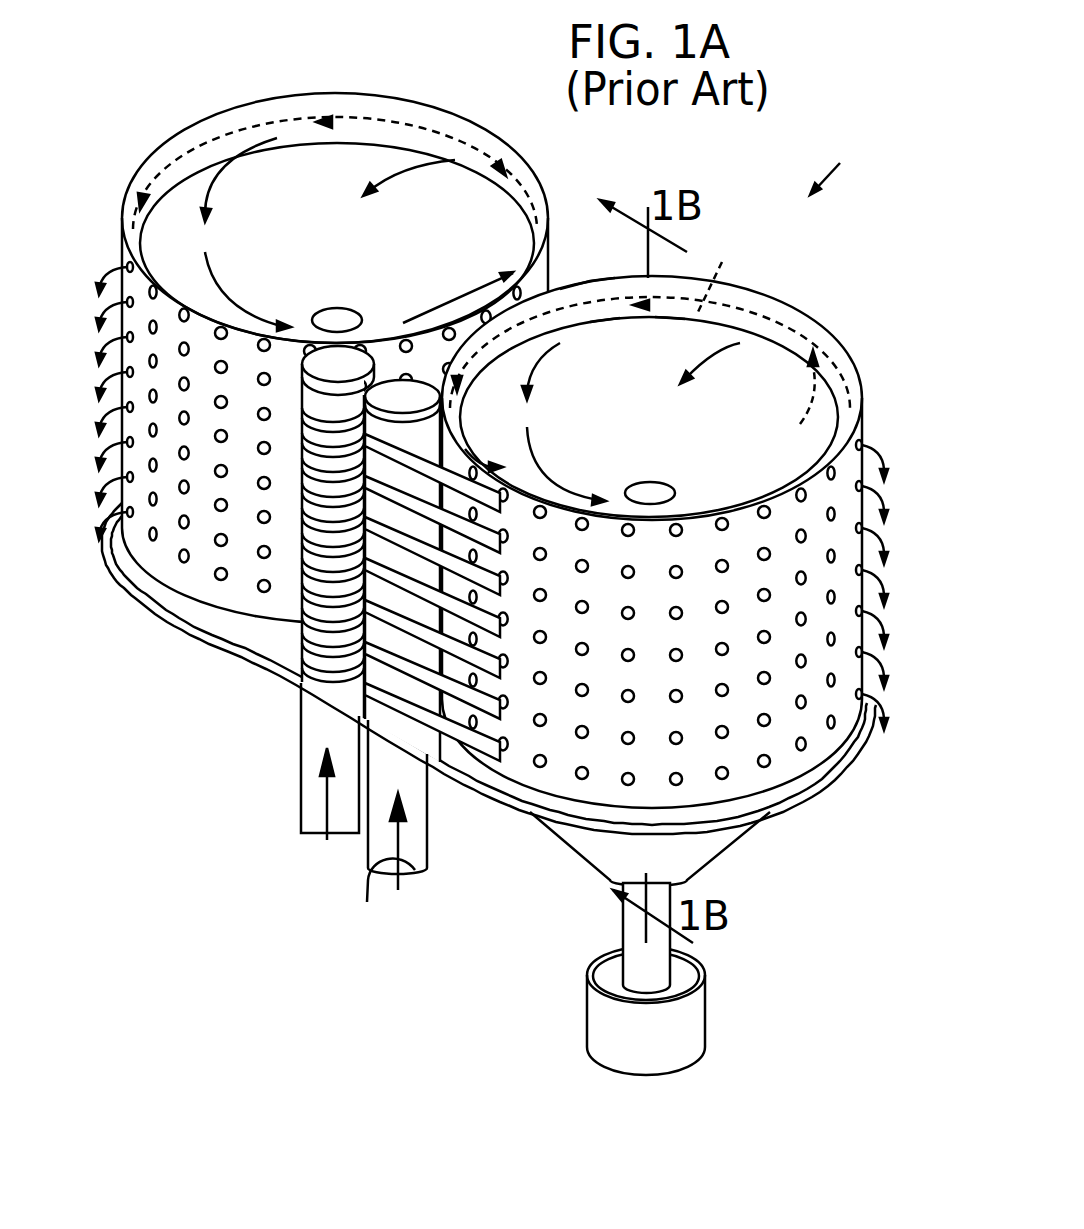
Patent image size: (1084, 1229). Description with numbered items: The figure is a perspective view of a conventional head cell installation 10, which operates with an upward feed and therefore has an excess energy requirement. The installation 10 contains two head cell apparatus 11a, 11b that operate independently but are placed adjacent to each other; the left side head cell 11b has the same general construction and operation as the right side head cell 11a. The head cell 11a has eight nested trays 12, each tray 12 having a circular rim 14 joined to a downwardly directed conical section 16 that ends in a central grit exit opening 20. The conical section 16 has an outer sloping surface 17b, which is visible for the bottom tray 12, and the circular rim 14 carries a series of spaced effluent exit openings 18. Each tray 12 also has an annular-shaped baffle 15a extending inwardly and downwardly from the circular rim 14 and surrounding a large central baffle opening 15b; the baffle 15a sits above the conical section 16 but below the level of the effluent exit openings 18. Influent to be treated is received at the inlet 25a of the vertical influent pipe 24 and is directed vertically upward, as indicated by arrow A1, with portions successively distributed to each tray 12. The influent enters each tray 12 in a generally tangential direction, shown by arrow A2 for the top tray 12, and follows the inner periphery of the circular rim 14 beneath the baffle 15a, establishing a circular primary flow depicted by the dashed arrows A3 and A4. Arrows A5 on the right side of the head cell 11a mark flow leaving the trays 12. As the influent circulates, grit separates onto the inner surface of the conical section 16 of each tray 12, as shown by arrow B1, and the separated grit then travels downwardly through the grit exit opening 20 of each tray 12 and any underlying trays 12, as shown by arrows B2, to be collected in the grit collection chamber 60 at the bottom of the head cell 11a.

The head cell installation 10 is at (840, 164).
The head cell apparatus 11a is at (836, 343).
The head cell apparatus 11b is at (432, 106).
The tray 12 is at (862, 425).
The circular rim 14 is at (851, 352).
The annular-shaped baffle 15a is at (605, 320).
The central baffle opening 15b is at (668, 321).
The conical section 16 is at (663, 440).
The outer sloping surface 17b is at (735, 833).
The effluent exit openings 18 is at (603, 284).
The grit exit opening 20 is at (657, 484).
The vertical influent pipe 24 is at (427, 828).
The inlet 25a is at (415, 872).
The grit collection chamber 60 is at (700, 1008).
The influent flow arrow A1 is at (381, 899).
The tangential entry flow arrow A2 is at (468, 447).
The primary circular flow arrow A3 is at (799, 412).
The primary circular flow arrow A4 is at (717, 270).
The flow arrow A5 is at (872, 449).
The grit separation arrow B1 is at (639, 380).
The grit descent arrow B2 is at (554, 470).